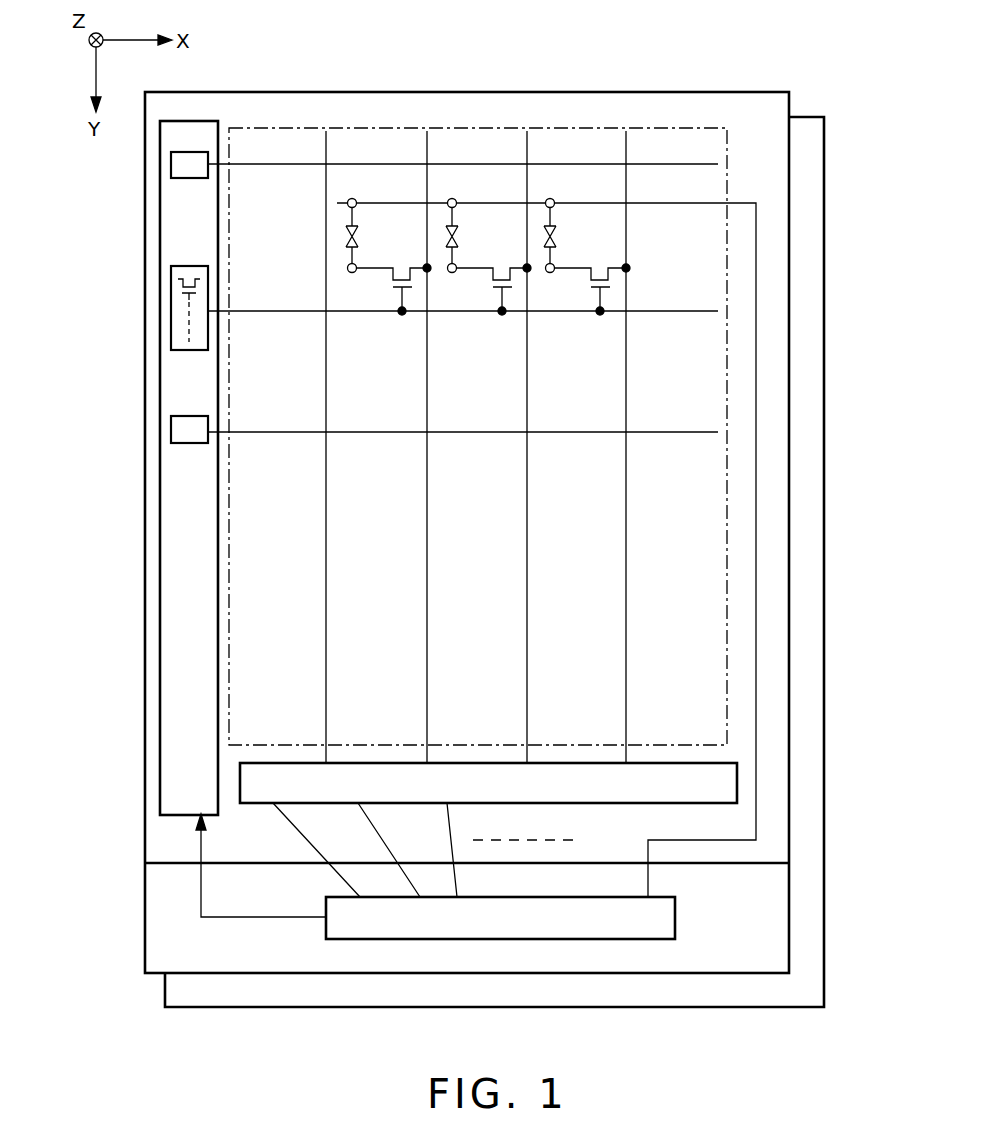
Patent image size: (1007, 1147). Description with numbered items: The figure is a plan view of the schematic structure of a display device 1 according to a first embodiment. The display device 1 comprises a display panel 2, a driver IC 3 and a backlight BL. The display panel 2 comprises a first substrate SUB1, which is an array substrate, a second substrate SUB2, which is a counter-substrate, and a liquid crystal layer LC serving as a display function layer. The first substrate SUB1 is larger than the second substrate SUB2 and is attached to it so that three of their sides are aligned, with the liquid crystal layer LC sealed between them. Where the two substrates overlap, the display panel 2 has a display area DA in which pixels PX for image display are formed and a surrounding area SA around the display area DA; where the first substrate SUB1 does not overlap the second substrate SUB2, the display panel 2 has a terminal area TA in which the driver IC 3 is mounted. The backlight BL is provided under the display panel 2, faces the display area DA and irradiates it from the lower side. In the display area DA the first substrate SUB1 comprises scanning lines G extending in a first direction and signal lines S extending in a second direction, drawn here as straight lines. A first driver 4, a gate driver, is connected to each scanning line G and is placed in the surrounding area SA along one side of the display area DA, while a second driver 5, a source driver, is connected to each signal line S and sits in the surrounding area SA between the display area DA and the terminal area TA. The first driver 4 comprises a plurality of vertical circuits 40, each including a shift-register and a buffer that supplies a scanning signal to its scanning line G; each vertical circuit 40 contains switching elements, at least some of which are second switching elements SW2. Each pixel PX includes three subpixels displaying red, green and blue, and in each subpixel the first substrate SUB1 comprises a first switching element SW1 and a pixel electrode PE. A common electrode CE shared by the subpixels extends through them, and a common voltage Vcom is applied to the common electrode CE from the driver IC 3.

The display device 1 is at (748, 66).
The display panel 2 is at (52, 822).
The driver IC 3 is at (676, 917).
The first driver 4 is at (160, 688).
The second driver 5 is at (610, 805).
The vertical circuit 40 is at (171, 164).
The first substrate SUB1 is at (160, 888).
The second substrate SUB2 is at (160, 840).
The backlight BL is at (684, 1010).
The display area DA is at (686, 126).
The surrounding area SA is at (778, 811).
The terminal area TA is at (778, 899).
The scanning line G is at (258, 162).
The signal line S is at (326, 542).
The common electrode CE is at (347, 203).
The liquid crystal layer LC is at (345, 236).
The pixel electrode PE is at (346, 268).
The first switching element SW1 is at (394, 290).
The second switching element SW2 is at (171, 284).
The pixel PX is at (592, 46).
The common voltage Vcom is at (615, 885).